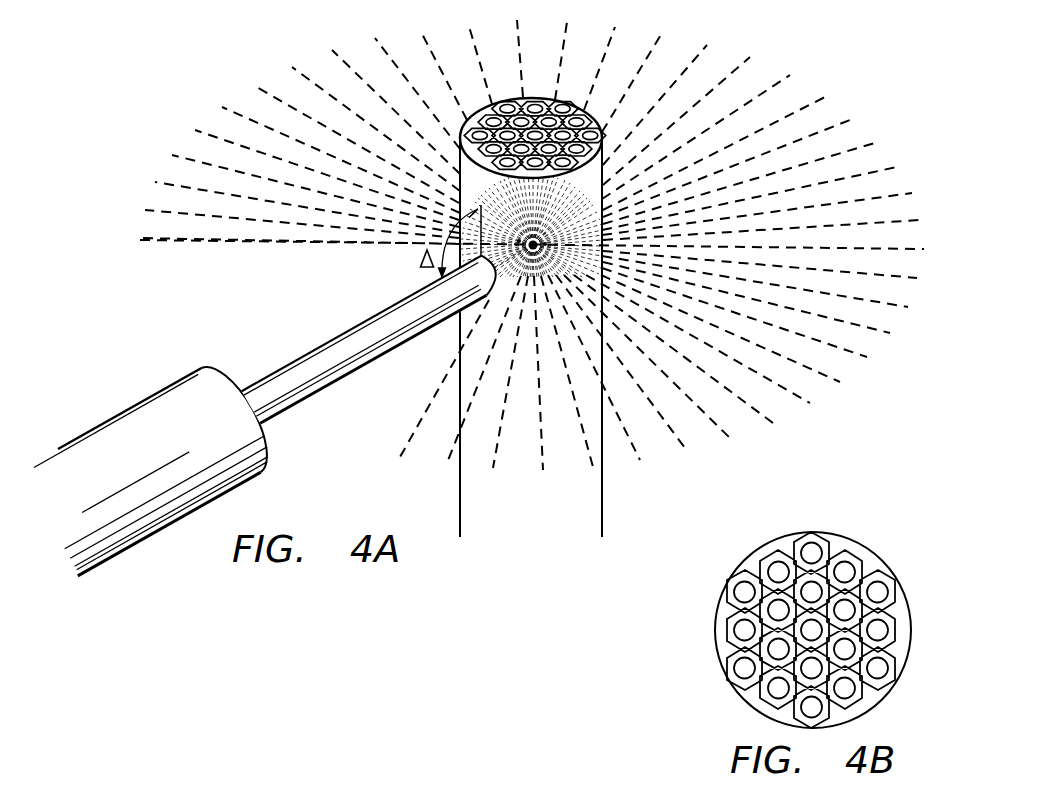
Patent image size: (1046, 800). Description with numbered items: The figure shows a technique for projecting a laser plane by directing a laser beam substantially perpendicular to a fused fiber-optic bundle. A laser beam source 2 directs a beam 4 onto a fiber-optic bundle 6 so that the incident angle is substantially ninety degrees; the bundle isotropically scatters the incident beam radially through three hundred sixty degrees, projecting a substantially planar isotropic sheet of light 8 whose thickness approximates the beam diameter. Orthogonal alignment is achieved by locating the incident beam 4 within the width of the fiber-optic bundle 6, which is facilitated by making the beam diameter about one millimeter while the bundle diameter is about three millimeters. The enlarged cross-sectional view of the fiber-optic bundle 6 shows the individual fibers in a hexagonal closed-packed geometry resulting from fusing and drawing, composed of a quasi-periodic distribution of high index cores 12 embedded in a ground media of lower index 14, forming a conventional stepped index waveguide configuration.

In FIG. 4A, the laser beam source 2 is at (122, 415).
In FIG. 4A, the laser beam 4 is at (511, 262).
In FIG. 4A, the fiber-optic bundle 6 is at (602, 497).
In FIG. 4B, the fiber-optic bundle 6 is at (852, 539).
In FIG. 4A, the planar isotropic sheet of light 8 is at (820, 83).
In FIG. 4B, the high index cores 12 is at (740, 632).
In FIG. 4B, the ground media of lower index 14 is at (725, 592).